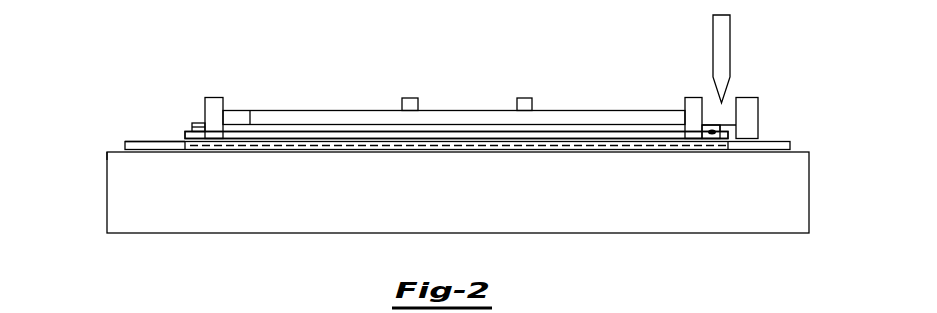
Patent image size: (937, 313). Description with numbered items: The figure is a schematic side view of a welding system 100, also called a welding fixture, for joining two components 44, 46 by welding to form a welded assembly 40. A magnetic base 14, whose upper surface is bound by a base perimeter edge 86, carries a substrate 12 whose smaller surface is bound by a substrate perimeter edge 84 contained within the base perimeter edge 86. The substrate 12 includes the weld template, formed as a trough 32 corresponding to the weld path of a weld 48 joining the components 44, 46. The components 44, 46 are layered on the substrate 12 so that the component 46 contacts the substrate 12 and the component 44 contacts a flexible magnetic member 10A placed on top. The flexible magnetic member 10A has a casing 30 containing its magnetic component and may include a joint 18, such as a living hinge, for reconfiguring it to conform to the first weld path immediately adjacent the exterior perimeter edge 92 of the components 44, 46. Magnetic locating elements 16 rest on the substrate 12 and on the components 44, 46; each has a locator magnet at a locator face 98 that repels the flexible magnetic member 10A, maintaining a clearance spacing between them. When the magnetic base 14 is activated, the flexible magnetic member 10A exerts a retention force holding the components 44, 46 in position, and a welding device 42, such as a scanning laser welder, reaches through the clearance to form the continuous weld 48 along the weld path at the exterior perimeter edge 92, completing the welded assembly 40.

The welding system 100 is at (814, 52).
The flexible magnetic member 10A is at (481, 90).
The substrate 12 is at (790, 143).
The magnetic base 14 is at (810, 189).
The magnetic locating element 16 is at (215, 97).
The joint 18 is at (255, 110).
The casing 30 is at (318, 110).
The trough 32 is at (352, 148).
The welded assembly 40 is at (165, 132).
The welding device 42 is at (731, 27).
The component 44 is at (200, 122).
The component 46 is at (200, 139).
The weld 48 is at (717, 125).
The substrate perimeter edge 84 is at (119, 130).
The base perimeter edge 86 is at (96, 146).
The exterior perimeter edge 92 is at (192, 127).
The locator face 98 is at (728, 115).